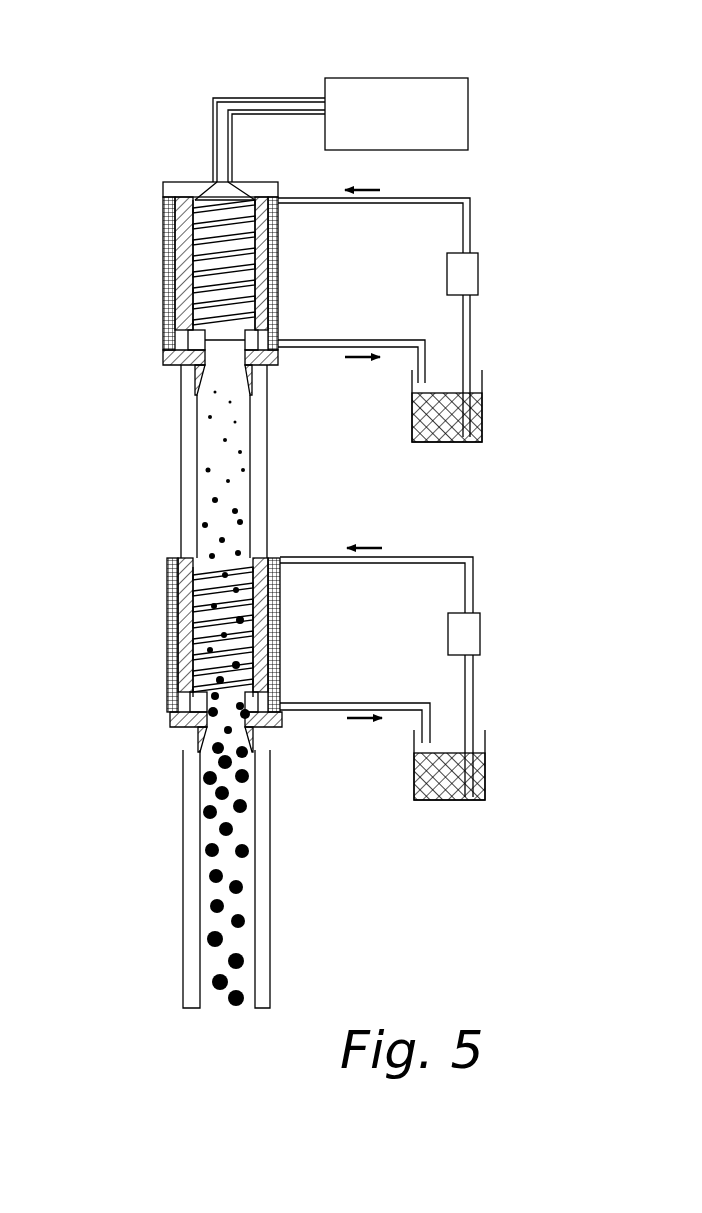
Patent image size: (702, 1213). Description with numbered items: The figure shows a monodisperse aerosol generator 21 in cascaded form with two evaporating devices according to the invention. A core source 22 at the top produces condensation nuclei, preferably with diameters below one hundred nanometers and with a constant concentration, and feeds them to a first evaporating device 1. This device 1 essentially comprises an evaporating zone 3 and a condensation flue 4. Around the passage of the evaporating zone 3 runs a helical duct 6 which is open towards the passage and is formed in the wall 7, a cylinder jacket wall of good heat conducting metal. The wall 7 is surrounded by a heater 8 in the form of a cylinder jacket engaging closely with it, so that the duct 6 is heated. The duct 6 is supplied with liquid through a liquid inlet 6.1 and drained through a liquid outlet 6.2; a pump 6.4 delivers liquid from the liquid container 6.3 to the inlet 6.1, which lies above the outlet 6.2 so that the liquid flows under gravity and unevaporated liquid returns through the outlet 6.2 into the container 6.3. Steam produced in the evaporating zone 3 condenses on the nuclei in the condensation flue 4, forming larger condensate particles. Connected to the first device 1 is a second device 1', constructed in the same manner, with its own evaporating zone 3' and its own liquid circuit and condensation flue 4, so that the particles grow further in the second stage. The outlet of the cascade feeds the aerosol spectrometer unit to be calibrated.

The evaporating device 1 is at (317, 295).
The second evaporating device 1' is at (280, 644).
The evaporating zone 3 is at (161, 273).
The evaporating zone of second device 3' is at (177, 635).
The condensation flue 4 is at (153, 417).
The duct 6 is at (207, 233).
The liquid inlet 6.1 is at (410, 198).
The liquid outlet 6.2 is at (292, 345).
The liquid container 6.3 is at (478, 435).
The pump 6.4 is at (465, 275).
The wall 7 is at (187, 285).
The heater 8 is at (170, 342).
The monodisperse aerosol generator 21 is at (170, 110).
The core source 22 is at (352, 100).